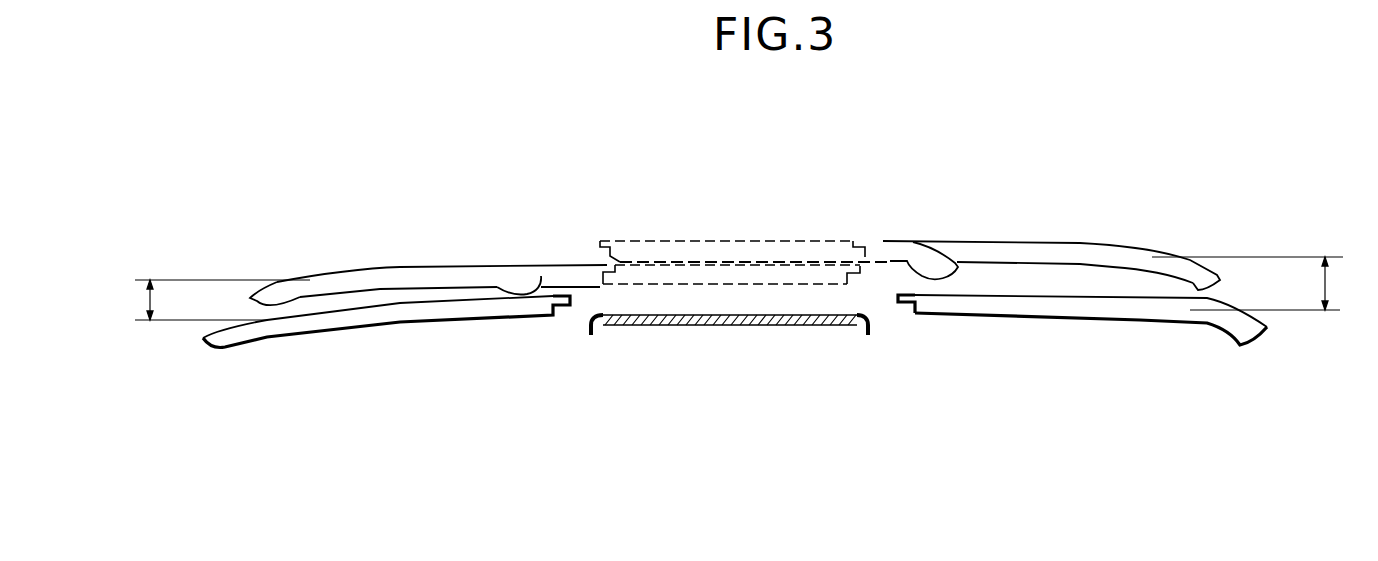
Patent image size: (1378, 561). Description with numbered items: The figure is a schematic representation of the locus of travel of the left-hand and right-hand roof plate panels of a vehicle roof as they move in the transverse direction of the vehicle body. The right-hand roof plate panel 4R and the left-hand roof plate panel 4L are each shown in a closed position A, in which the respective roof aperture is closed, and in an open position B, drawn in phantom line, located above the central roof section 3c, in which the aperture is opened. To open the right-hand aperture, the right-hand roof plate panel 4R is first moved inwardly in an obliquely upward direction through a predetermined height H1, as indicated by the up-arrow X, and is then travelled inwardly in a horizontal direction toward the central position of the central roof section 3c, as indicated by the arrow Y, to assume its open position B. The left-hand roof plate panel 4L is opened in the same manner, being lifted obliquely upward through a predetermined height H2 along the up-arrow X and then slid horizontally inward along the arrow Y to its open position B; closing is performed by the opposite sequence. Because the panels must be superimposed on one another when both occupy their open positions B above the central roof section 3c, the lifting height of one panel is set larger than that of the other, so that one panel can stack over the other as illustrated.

The right-hand roof plate panel 4R is at (400, 268).
The left-hand roof plate panel 4L is at (753, 242).
The central roof section 3c is at (753, 325).
The closed position A is at (398, 333).
The open position B is at (685, 237).
The predetermined height H1 is at (213, 300).
The predetermined height H2 is at (1259, 283).
The up-arrow X is at (347, 297).
The arrow Y is at (645, 273).